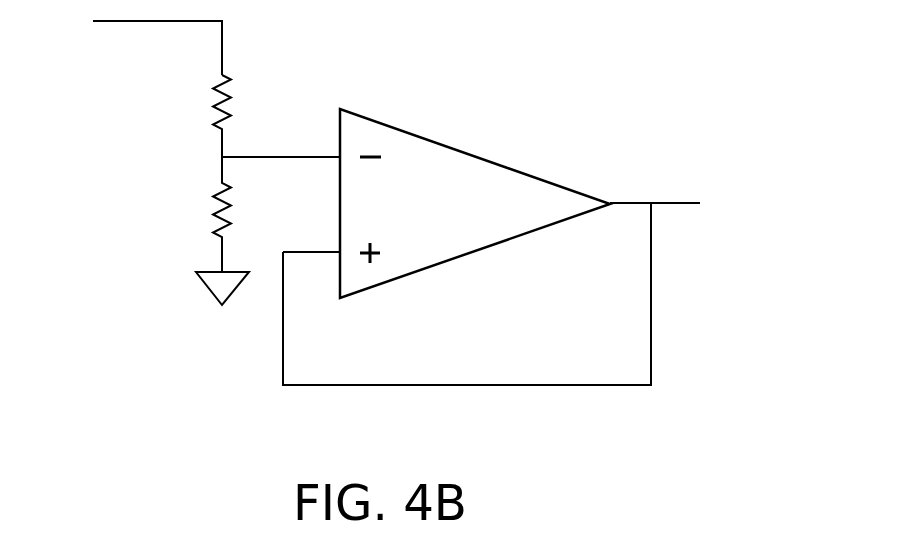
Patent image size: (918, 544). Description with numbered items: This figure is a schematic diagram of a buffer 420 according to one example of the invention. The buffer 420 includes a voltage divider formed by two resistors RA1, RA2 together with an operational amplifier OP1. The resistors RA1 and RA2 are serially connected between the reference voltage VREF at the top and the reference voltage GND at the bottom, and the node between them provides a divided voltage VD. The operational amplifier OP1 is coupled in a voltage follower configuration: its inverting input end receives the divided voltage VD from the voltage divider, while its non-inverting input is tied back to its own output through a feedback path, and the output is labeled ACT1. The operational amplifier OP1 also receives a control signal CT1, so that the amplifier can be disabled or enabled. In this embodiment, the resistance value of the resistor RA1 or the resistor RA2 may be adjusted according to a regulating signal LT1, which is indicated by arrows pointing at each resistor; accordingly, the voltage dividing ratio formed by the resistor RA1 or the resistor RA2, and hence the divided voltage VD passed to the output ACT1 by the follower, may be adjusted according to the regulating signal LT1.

The reference voltage VREF is at (128, 40).
The resistor RA1 is at (194, 116).
The resistor RA2 is at (194, 214).
The divided voltage VD is at (281, 138).
The reference voltage GND is at (222, 308).
The regulating signal LT1 is at (256, 110).
The operational amplifier OP1 is at (477, 157).
The control signal CT1 is at (475, 252).
The output signal ACT1 is at (682, 202).
The buffer 420 is at (757, 413).